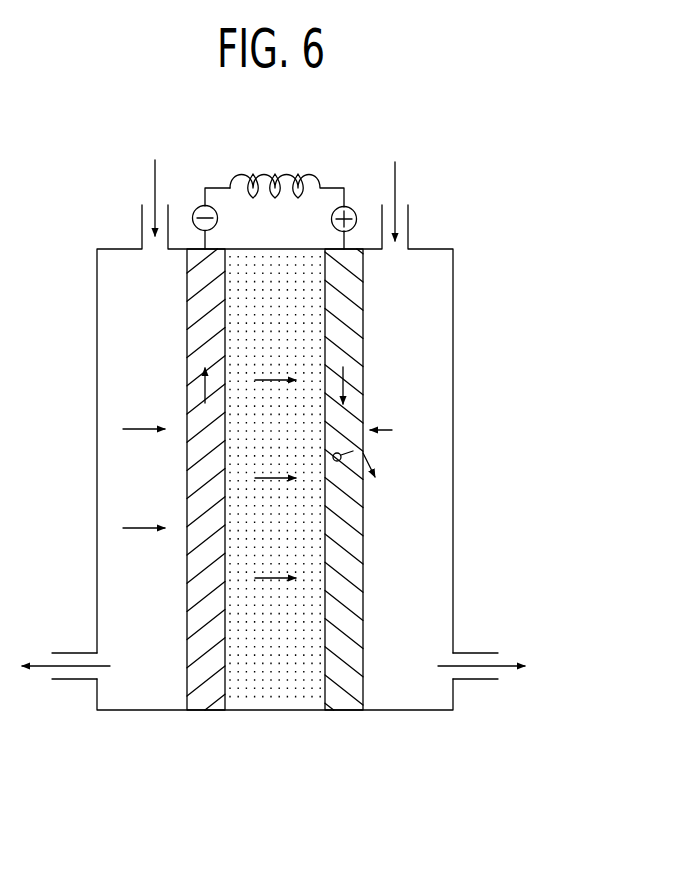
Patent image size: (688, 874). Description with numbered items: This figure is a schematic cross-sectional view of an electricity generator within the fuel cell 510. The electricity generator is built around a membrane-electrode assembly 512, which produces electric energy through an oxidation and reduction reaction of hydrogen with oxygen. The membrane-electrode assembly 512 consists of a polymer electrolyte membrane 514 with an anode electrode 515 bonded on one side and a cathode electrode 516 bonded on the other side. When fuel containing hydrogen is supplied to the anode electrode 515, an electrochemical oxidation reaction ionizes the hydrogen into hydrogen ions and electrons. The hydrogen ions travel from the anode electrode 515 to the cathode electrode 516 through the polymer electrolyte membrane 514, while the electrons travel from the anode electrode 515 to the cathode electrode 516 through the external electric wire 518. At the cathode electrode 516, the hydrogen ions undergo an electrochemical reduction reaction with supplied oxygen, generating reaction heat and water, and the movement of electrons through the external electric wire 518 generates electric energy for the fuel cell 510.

The fuel cell 510 is at (469, 340).
The membrane-electrode assembly 512 is at (268, 546).
The polymer electrolyte membrane 514 is at (273, 700).
The anode electrode 515 is at (205, 698).
The cathode electrode 516 is at (339, 521).
The external electric wire 518 is at (217, 187).